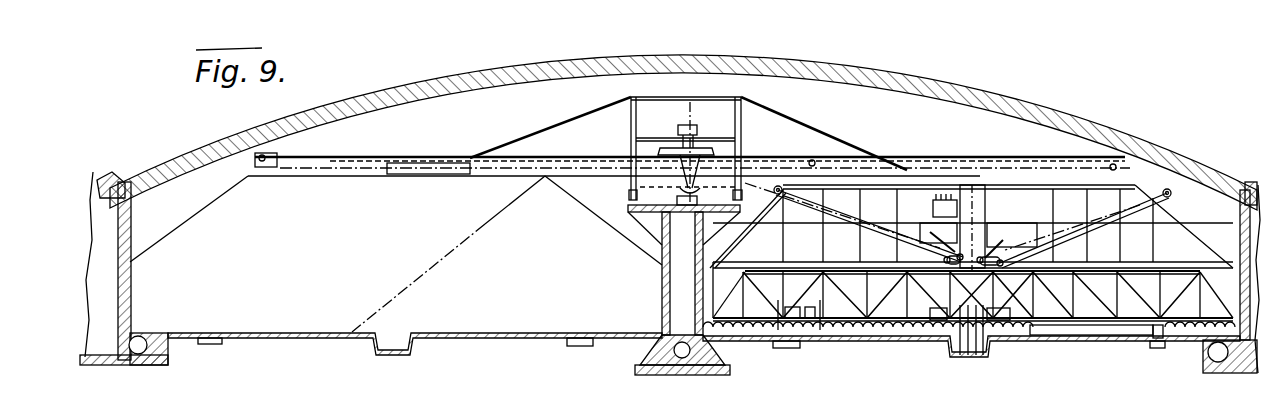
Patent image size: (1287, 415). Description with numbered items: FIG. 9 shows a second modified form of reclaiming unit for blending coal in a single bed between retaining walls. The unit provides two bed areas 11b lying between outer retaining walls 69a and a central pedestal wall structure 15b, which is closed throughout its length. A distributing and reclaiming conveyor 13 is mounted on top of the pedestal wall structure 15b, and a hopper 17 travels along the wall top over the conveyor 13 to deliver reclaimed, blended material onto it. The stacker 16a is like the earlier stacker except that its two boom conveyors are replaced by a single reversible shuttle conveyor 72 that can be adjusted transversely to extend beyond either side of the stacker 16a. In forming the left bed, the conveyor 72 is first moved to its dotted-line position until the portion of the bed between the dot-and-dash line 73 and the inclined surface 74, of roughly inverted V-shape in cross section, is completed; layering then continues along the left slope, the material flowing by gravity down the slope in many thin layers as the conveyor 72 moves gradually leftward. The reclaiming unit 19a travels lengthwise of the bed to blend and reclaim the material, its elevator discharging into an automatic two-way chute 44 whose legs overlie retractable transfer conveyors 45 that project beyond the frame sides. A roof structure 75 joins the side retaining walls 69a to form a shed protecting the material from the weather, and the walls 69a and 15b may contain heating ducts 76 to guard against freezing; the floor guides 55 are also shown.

The roof structure 75 is at (590, 58).
The conveyor 72 is at (478, 157).
The stacker 16a is at (748, 126).
The hopper 17 is at (640, 187).
The conveyor 13 is at (692, 192).
The reclaiming unit 19a is at (992, 206).
The transfer conveyor 45 is at (776, 194).
The two-way chute 44 is at (942, 200).
The outer retaining wall 69a is at (131, 312).
The dot-and-dash line 73 is at (437, 280).
The inclined surface 74 is at (560, 228).
The central pedestal wall structure 15b is at (662, 302).
The heating duct 76 is at (144, 355).
The floor channel 55 is at (392, 352).
The bed area 11b is at (482, 340).